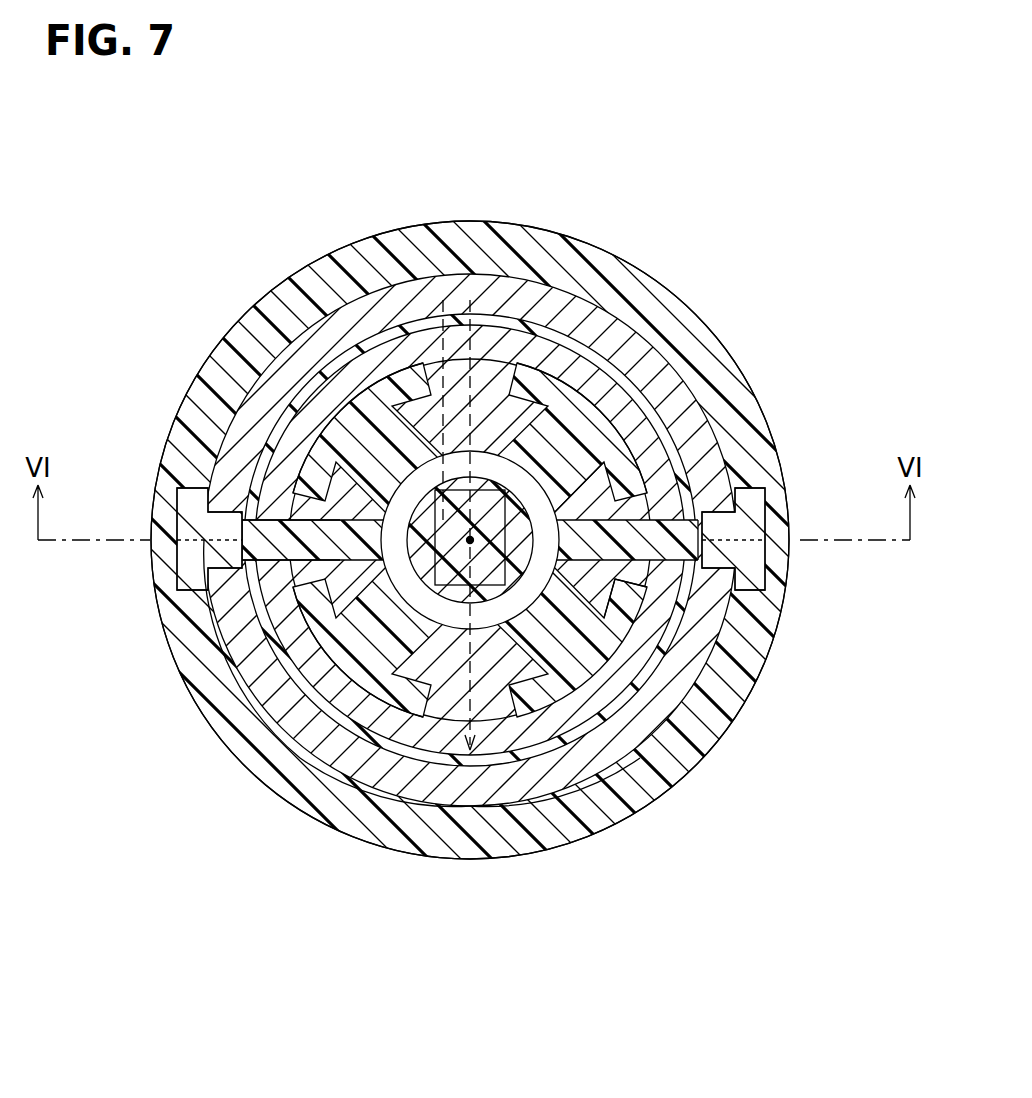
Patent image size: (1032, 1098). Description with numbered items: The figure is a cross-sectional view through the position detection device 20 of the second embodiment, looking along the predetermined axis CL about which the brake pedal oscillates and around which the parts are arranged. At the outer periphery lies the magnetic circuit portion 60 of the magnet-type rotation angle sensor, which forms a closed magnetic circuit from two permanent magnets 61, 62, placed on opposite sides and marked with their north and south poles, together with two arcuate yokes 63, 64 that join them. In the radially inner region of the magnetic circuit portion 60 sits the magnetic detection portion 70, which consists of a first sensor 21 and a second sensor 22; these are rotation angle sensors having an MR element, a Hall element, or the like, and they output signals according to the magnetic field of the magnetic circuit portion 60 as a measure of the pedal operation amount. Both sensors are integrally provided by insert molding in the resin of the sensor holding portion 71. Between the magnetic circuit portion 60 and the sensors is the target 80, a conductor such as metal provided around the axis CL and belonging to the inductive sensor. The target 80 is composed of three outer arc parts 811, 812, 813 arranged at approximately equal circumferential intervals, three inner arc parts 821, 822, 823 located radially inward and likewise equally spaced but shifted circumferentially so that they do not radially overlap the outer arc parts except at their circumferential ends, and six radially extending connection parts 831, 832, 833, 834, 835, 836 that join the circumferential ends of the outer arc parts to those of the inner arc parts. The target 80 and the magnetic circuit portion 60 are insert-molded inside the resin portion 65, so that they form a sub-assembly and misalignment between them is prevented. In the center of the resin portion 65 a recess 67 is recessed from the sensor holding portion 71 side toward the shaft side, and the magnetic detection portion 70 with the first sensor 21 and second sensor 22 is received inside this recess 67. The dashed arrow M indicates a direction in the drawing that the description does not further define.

The position detection device 20 is at (666, 148).
The first sensor 21 is at (445, 490).
The second sensor 22 is at (508, 490).
The magnetic circuit portion 60 is at (684, 717).
The permanent magnet 61 is at (178, 548).
The permanent magnet 62 is at (758, 548).
The arcuate yoke 63 is at (485, 300).
The arcuate yoke 64 is at (510, 795).
The resin portion 65 is at (236, 760).
The recess 67 is at (343, 745).
The magnetic detection portion 70 is at (600, 770).
The sensor holding portion 71 is at (640, 745).
The target 80 is at (516, 549).
The outer arc part 811 is at (540, 330).
The outer arc part 812 is at (705, 668).
The outer arc part 813 is at (262, 680).
The inner arc part 821 is at (640, 458).
The inner arc part 822 is at (452, 765).
The inner arc part 823 is at (255, 460).
The connection part 831 is at (608, 330).
The connection part 832 is at (738, 480).
The connection part 833 is at (555, 760).
The connection part 834 is at (403, 770).
The connection part 835 is at (345, 492).
The connection part 836 is at (285, 360).
The magnetization direction M is at (452, 290).
The axis CL is at (415, 330).